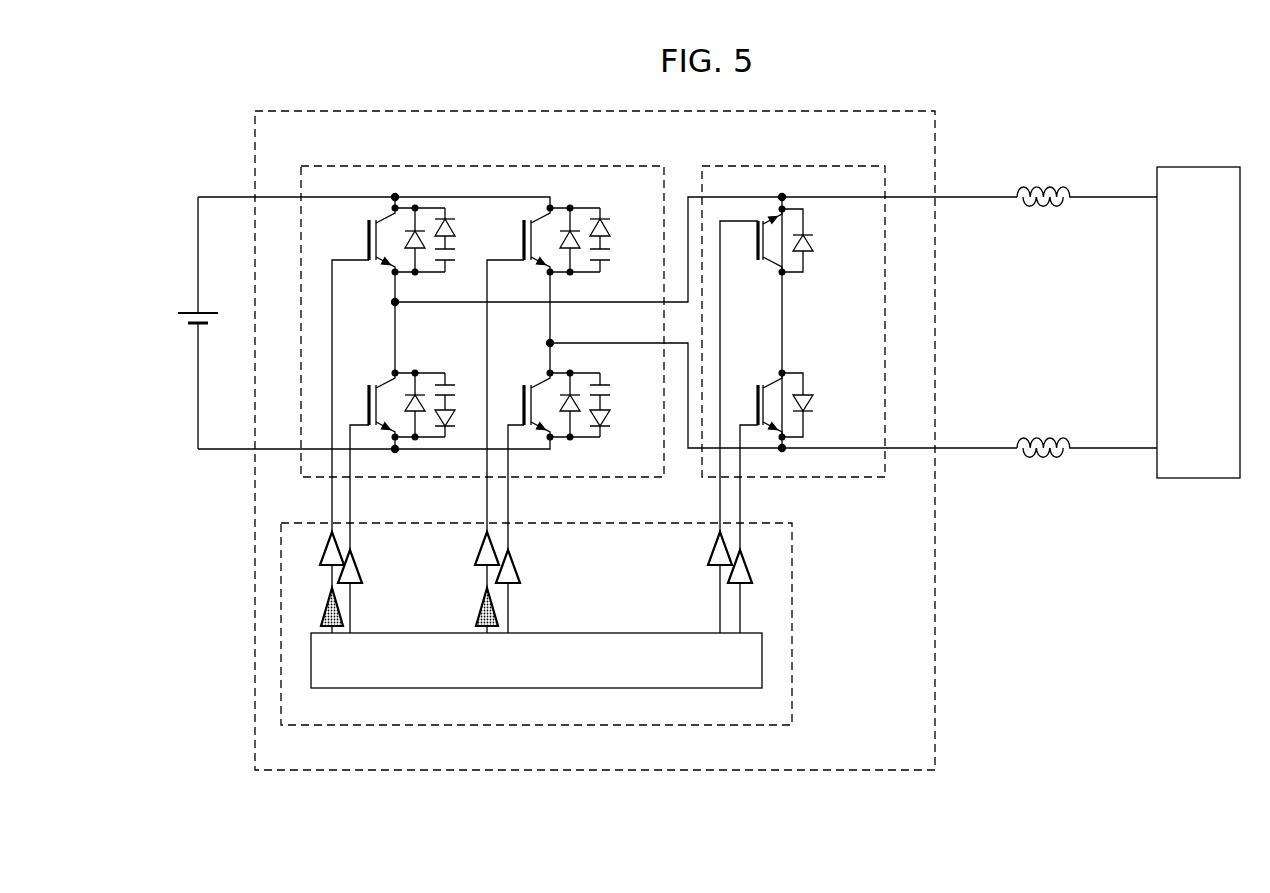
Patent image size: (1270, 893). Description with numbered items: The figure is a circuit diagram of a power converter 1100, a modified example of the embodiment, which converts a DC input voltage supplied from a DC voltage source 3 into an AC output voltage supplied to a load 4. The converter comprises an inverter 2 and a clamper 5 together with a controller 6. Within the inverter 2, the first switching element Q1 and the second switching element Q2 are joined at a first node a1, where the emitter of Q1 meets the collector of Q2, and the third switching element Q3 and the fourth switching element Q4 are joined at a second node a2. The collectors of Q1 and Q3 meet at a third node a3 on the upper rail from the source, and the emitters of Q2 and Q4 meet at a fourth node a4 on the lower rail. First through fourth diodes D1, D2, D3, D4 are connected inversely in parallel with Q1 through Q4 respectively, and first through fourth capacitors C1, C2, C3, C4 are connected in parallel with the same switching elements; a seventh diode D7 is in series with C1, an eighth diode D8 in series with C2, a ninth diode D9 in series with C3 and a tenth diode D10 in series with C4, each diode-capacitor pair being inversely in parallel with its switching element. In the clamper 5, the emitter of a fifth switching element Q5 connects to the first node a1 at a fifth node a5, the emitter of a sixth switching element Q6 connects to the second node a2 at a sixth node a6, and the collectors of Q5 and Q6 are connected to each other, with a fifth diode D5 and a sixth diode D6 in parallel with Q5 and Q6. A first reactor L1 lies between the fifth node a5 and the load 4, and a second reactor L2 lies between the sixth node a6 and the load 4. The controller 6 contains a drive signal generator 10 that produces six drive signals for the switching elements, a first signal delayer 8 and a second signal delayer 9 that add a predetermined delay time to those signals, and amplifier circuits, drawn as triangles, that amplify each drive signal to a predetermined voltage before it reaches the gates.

The power converter 1100 is at (855, 111).
The inverter 2 is at (636, 166).
The DC voltage source 3 is at (178, 318).
The load 4 is at (1210, 167).
The clamper 5 is at (858, 166).
The controller 6 is at (795, 568).
The first signal delayer 8 is at (324, 613).
The second signal delayer 9 is at (479, 613).
The drive signal generator 10 is at (562, 633).
The first switching element Q1 is at (363, 370).
The second switching element Q2 is at (366, 461).
The third switching element Q3 is at (518, 370).
The fourth switching element Q4 is at (522, 461).
The fifth switching element Q5 is at (751, 370).
The sixth switching element Q6 is at (755, 461).
The first diode D1 is at (414, 240).
The second diode D2 is at (414, 405).
The third diode D3 is at (569, 240).
The fourth diode D4 is at (569, 405).
The fifth diode D5 is at (790, 240).
The sixth diode D6 is at (790, 405).
The seventh diode D7 is at (458, 228).
The eighth diode D8 is at (458, 419).
The ninth diode D9 is at (613, 228).
The tenth diode D10 is at (623, 419).
The first capacitor C1 is at (457, 268).
The second capacitor C2 is at (457, 383).
The third capacitor C3 is at (612, 268).
The fourth capacitor C4 is at (612, 383).
The first reactor L1 is at (969, 182).
The second reactor L2 is at (969, 462).
The first node a1 is at (399, 304).
The second node a2 is at (546, 342).
The third node a3 is at (399, 196).
The fourth node a4 is at (399, 451).
The fifth node a5 is at (786, 196).
The sixth node a6 is at (786, 450).